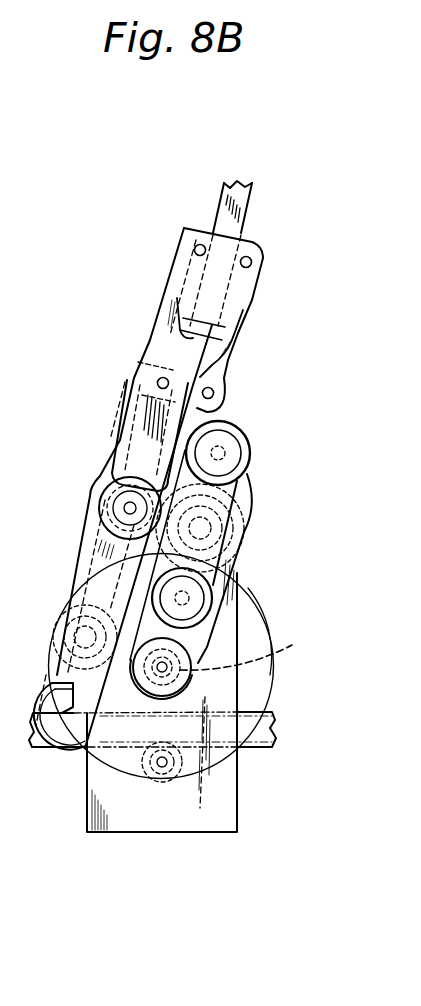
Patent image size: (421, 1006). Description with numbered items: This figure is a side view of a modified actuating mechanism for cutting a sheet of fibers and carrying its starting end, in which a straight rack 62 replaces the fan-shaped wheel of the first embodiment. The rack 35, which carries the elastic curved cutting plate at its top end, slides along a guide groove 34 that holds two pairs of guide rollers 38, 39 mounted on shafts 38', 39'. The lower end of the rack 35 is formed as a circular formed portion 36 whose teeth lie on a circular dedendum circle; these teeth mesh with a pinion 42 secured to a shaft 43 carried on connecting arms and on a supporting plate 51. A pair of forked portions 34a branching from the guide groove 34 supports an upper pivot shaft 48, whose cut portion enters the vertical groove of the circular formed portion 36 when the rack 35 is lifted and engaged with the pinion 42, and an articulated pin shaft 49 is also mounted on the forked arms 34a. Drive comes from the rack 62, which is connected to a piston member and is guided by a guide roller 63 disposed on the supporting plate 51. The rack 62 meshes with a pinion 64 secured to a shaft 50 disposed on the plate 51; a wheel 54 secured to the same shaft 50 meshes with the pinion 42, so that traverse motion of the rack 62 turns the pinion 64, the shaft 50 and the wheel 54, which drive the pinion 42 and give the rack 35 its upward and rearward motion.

The guide groove 34 is at (172, 277).
The forked portion 34a is at (137, 428).
The rack 35 is at (237, 217).
The circular formed portion 36 is at (58, 757).
The guide roller 38 is at (256, 266).
The shaft 38' is at (273, 285).
The guide roller 39 is at (222, 374).
The shaft 39' is at (238, 403).
The pinion 42 is at (241, 550).
The shaft 43 is at (215, 531).
The upper pivot shaft 48 is at (128, 508).
The articulated pin shaft 49 is at (72, 643).
The shaft 50 is at (163, 668).
The supporting plate 51 is at (235, 804).
The wheel 54 is at (262, 612).
The rack 62 is at (260, 750).
The guide roller 63 is at (172, 768).
The pinion 64 is at (249, 650).